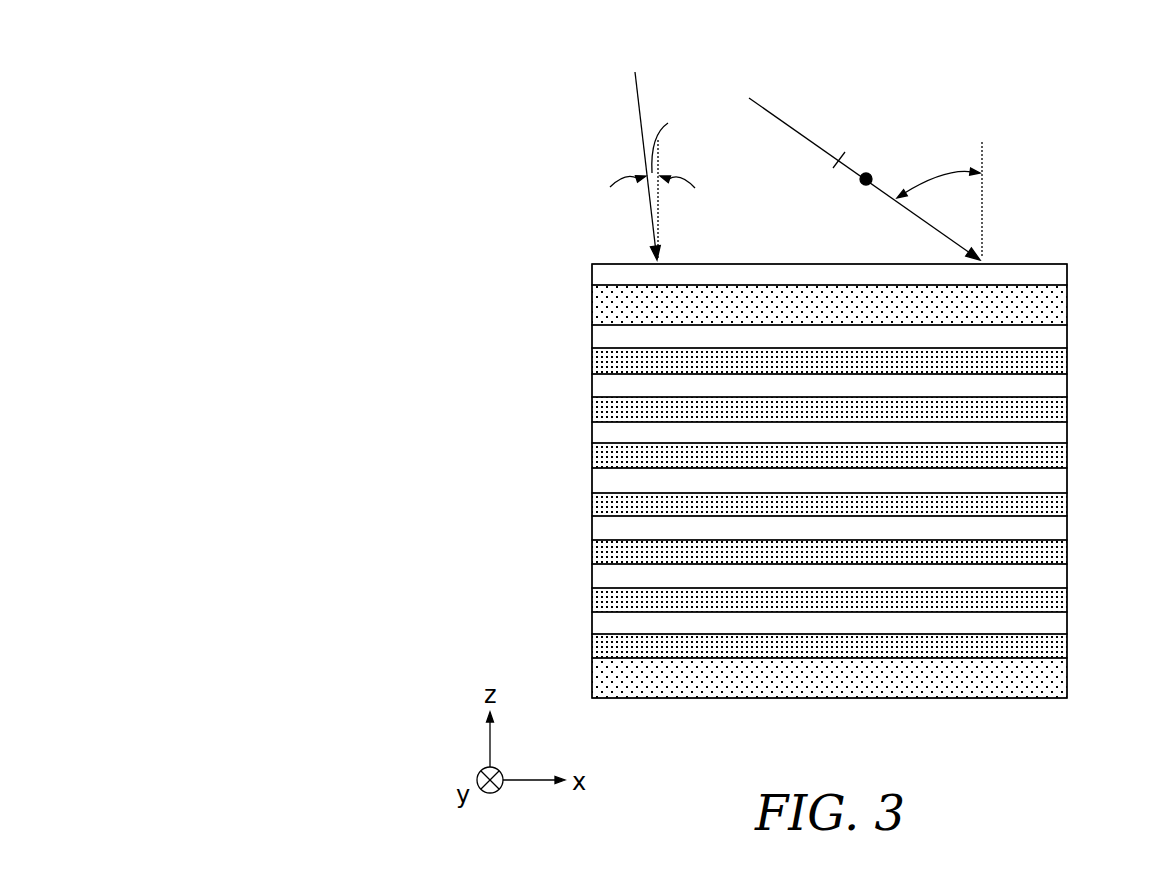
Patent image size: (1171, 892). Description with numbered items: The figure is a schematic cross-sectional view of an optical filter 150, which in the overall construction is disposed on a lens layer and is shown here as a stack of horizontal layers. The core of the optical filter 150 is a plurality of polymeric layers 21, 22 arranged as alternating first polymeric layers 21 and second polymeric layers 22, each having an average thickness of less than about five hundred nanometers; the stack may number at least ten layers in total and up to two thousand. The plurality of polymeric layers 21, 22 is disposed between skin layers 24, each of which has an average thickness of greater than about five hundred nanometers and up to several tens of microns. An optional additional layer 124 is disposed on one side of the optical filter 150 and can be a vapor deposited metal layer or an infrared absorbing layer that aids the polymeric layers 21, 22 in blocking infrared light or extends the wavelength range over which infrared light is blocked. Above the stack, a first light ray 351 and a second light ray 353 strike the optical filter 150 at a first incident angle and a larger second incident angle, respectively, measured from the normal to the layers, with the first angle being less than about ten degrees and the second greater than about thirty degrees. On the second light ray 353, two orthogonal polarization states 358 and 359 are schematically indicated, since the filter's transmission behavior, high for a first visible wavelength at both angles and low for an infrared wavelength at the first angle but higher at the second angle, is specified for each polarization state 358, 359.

The optical filter 150 is at (418, 240).
The optional additional layer 124 is at (1013, 280).
The skin layer 24 is at (1057, 315).
The first polymeric layer 21 is at (1058, 335).
The second polymeric layer 22 is at (1058, 358).
The first light ray 351 is at (637, 90).
The second light ray 353 is at (782, 120).
The first polarization state 358 is at (840, 148).
The second polarization state 359 is at (860, 187).